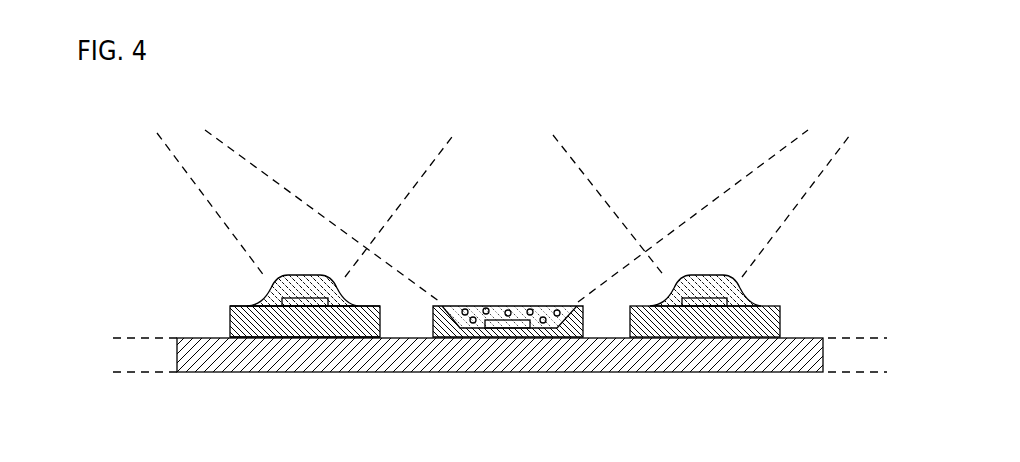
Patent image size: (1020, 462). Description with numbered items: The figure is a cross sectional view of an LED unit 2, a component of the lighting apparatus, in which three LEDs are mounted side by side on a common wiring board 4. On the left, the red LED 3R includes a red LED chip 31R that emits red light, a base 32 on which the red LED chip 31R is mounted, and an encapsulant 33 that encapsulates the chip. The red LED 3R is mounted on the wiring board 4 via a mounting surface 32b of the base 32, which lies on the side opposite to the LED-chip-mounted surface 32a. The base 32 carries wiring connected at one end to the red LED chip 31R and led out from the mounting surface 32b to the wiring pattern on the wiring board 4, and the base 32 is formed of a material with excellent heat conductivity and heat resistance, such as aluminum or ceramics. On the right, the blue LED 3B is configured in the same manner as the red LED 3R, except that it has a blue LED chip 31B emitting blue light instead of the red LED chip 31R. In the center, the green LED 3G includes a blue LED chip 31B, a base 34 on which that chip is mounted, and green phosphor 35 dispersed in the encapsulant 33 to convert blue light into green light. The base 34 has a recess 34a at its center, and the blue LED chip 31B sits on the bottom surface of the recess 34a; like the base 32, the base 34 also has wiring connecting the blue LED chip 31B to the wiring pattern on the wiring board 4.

The LED unit 2 is at (90, 193).
The wiring board 4 is at (213, 355).
The base 32 is at (270, 332).
The LED-chip-mounted surface 32a is at (233, 312).
The mounting surface 32b is at (240, 330).
The red LED chip 31R is at (302, 297).
The blue LED chip 31B is at (498, 317).
The encapsulant 33 is at (268, 297).
The base 34 is at (433, 320).
The recess 34a is at (453, 303).
The green phosphor 35 is at (547, 312).
The red LED 3R is at (325, 341).
The green LED 3G is at (510, 340).
The blue LED 3B is at (703, 340).